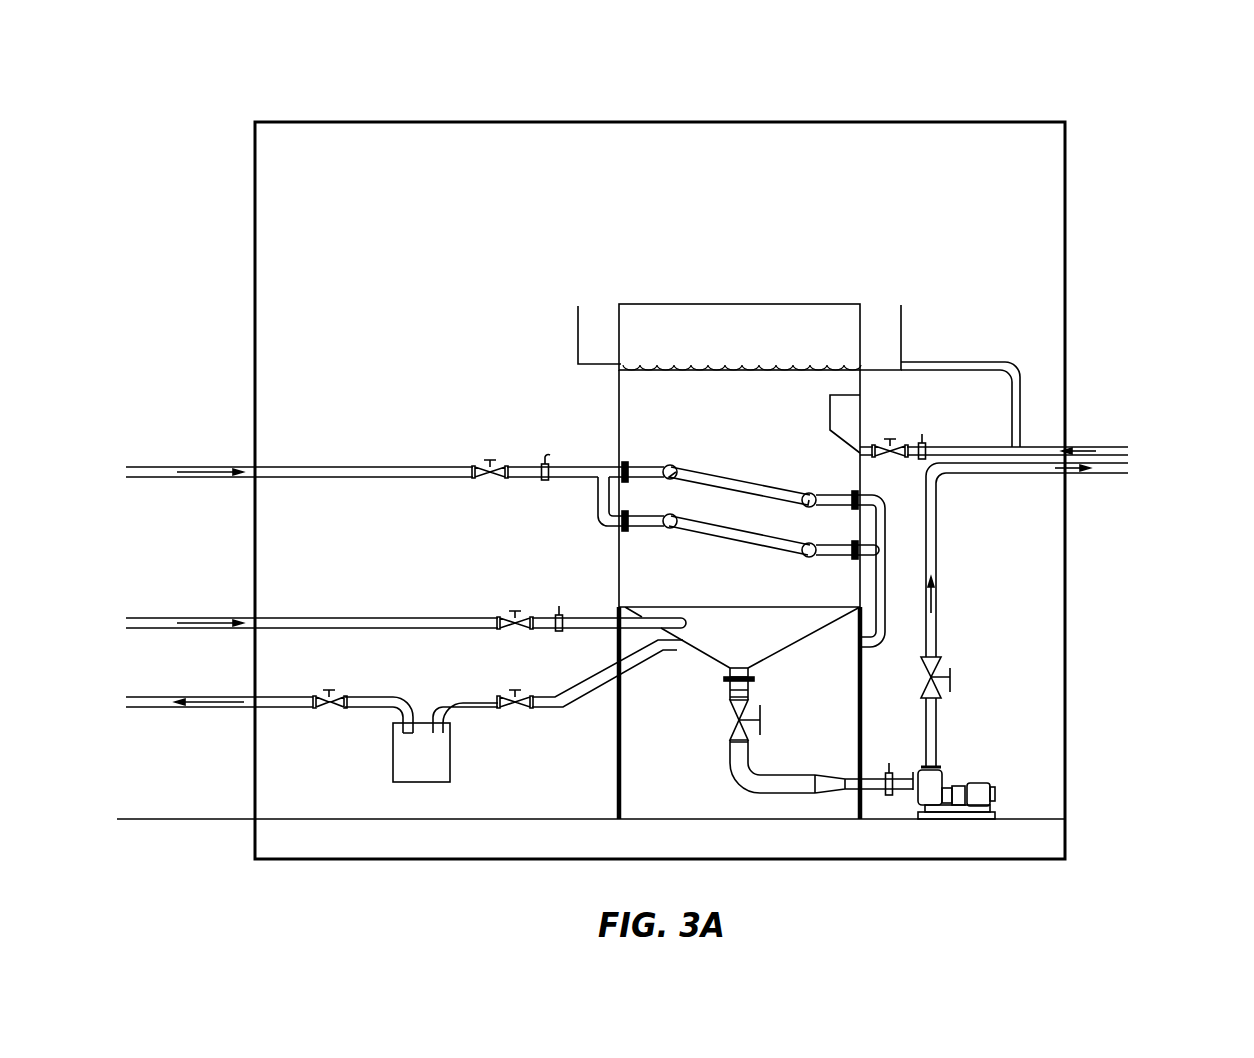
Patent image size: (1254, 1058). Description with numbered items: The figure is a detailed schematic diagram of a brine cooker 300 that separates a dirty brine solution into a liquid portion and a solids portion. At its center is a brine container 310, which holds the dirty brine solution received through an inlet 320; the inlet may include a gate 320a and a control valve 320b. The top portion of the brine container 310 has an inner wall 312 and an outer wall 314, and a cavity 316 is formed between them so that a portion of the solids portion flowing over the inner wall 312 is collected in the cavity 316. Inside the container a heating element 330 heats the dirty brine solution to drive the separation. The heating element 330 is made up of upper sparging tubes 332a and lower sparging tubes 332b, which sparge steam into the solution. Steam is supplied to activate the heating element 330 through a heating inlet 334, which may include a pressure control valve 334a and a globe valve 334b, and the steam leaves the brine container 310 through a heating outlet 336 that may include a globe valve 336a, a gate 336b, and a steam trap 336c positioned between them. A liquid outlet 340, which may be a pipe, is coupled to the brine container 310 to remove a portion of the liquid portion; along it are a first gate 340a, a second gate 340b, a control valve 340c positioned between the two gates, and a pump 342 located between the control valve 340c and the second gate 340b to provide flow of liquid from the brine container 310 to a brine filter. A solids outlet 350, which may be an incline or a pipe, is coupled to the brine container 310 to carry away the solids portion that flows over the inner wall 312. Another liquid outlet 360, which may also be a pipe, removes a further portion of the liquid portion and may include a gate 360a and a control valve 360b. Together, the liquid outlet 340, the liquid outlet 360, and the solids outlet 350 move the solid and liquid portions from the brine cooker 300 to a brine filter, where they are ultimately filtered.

The brine cooker 300 is at (1076, 123).
The brine container 310 is at (619, 425).
The inner wall 312 is at (619, 328).
The outer wall 314 is at (578, 322).
The cavity 316 is at (868, 337).
The inlet 320 is at (578, 630).
The gate 320a is at (508, 615).
The control valve 320b is at (560, 613).
The heating element 330 is at (733, 540).
The upper sparging tubes 332a is at (773, 488).
The lower sparging tubes 332b is at (770, 550).
The heating inlet 334 is at (575, 480).
The pressure control valve 334a is at (478, 465).
The globe valve 334b is at (545, 462).
The heating outlet 336 is at (885, 572).
The globe valve 336a is at (518, 710).
The gate 336b is at (326, 710).
The steam trap 336c is at (442, 764).
The liquid outlet 340 is at (748, 688).
The first gate 340a is at (728, 732).
The second gate 340b is at (948, 663).
The control valve 340c is at (890, 795).
The pump 342 is at (977, 785).
The solids outlet 350 is at (967, 358).
The liquid outlet 360 is at (973, 445).
The gate 360a is at (882, 445).
The control valve 360b is at (922, 460).